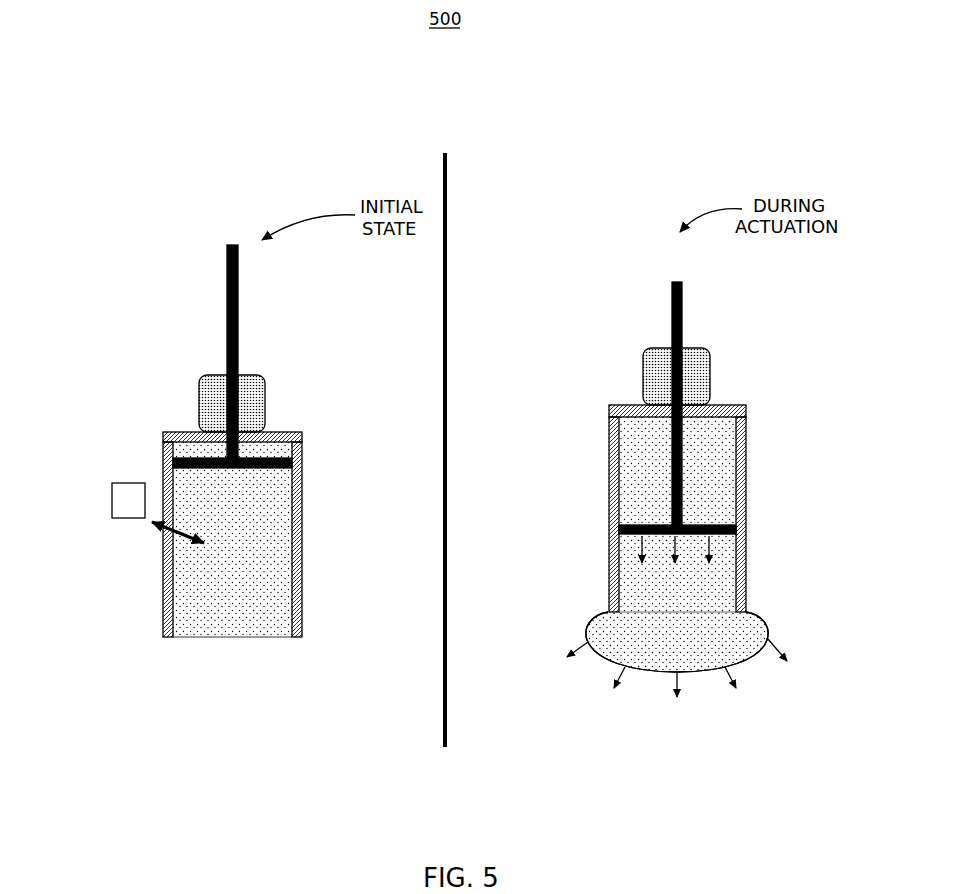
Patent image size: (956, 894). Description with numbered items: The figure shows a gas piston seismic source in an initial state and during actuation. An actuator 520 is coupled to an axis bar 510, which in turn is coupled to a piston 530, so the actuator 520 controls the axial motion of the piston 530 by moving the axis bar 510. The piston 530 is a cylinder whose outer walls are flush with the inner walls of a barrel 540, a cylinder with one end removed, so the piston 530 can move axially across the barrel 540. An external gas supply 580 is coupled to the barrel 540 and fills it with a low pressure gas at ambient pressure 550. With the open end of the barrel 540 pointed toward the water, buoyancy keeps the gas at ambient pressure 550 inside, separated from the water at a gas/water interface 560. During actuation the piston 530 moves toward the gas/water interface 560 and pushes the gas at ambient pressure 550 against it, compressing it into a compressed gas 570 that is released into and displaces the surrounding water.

The axis bar 510 is at (238, 308).
The actuator 520 is at (252, 372).
The piston 530 is at (277, 457).
The barrel 540 is at (302, 505).
The gas at ambient pressure 550 is at (265, 578).
The gas/water interface 560 is at (238, 638).
The compressed gas 570 is at (703, 642).
The external gas supply 580 is at (145, 483).